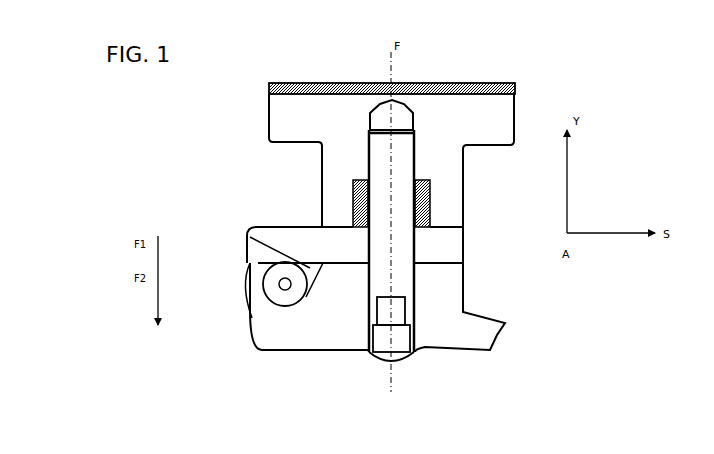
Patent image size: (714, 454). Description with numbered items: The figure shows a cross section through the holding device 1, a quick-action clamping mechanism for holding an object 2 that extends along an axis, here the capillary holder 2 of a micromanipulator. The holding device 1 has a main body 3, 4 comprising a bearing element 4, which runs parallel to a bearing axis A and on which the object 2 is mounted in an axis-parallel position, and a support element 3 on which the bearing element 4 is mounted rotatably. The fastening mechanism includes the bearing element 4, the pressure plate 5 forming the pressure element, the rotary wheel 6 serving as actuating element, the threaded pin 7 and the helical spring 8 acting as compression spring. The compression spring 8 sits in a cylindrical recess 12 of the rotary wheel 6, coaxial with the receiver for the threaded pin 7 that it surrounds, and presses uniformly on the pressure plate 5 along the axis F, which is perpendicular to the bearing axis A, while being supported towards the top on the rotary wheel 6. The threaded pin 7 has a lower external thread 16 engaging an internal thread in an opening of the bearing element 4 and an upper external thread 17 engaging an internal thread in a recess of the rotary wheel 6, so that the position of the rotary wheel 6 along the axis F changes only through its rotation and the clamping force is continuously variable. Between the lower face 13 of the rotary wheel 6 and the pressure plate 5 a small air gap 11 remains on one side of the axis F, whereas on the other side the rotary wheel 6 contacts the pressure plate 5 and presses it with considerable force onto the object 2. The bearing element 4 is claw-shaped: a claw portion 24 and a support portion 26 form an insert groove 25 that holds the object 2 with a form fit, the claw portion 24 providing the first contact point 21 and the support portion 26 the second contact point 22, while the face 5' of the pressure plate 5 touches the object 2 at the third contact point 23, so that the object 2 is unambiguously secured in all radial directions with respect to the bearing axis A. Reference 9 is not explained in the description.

The holding device 1 is at (206, 178).
The object 2 is at (248, 296).
The support element 3 is at (247, 265).
The bearing element 4 is at (466, 306).
The pressure plate 5 is at (256, 207).
The face of the pressure plate 5' is at (266, 193).
The rotary wheel 6 is at (518, 113).
The threaded pin 7 is at (412, 245).
The helical spring 8 is at (320, 183).
The bore 9 is at (430, 237).
The air gap 11 is at (463, 225).
The cylindrical recess 12 is at (437, 187).
The lower face of the rotary wheel 13 is at (309, 226).
The lower external thread 16 is at (365, 318).
The upper external thread 17 is at (352, 195).
The first contact point 21 is at (262, 318).
The second contact point 22 is at (305, 320).
The third contact point 23 is at (246, 238).
The claw portion 24 is at (258, 335).
The insert groove 25 is at (283, 312).
The support portion 26 is at (328, 312).
The bearing axis A is at (283, 285).